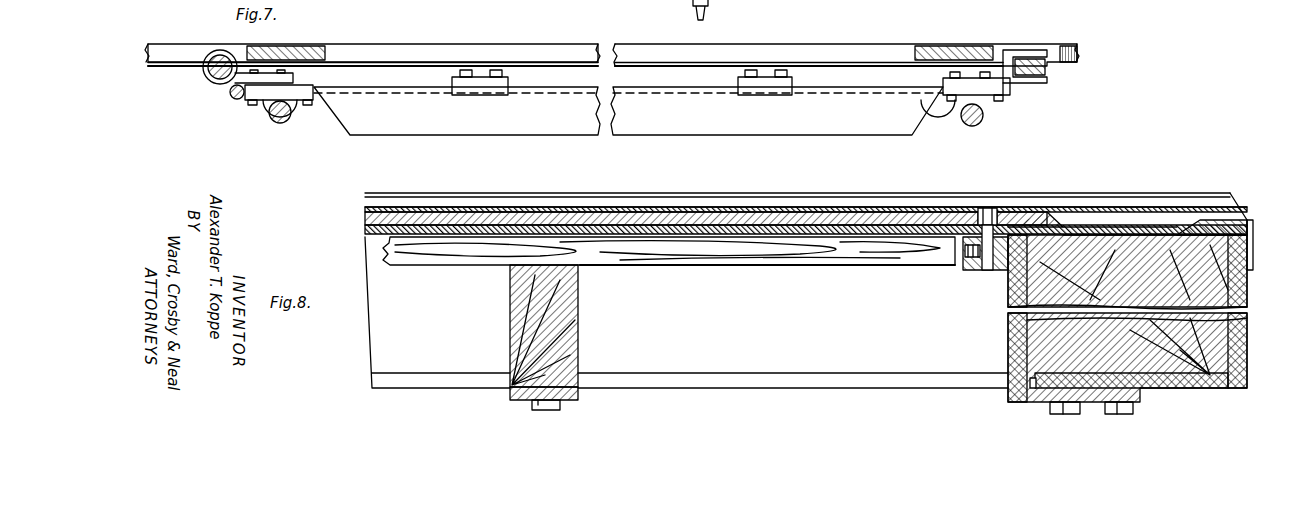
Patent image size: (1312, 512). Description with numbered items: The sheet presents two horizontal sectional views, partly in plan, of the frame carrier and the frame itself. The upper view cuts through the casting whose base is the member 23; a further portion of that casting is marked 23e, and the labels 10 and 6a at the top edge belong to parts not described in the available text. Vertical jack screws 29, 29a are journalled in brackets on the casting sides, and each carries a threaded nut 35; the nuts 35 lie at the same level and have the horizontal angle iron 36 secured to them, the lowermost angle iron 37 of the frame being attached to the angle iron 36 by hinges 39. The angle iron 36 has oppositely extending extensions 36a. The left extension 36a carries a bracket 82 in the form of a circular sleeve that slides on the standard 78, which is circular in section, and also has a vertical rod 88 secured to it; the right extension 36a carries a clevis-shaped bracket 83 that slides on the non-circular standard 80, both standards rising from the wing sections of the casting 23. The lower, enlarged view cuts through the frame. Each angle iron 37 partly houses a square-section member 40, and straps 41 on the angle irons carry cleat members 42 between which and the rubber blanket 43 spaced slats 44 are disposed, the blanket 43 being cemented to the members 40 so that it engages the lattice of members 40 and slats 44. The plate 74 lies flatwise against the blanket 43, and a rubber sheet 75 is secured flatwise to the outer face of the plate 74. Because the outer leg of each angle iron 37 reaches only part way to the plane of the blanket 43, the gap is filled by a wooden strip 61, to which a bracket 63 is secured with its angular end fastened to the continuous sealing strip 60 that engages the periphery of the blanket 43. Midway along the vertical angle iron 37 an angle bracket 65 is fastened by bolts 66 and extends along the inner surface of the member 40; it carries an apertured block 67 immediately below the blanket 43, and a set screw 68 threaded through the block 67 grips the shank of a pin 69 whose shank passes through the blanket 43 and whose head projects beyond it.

In FIG. 7, the top rail section 23e is at (500, 52).
In FIG. 7, the casting base member 23 is at (826, 50).
In FIG. 7, the angle iron 36 is at (603, 132).
In FIG. 7, the standard 78 is at (210, 70).
In FIG. 7, the bracket 82 is at (222, 83).
In FIG. 7, the vertical rod 88 is at (236, 100).
In FIG. 7, the extension 36a is at (268, 100).
In FIG. 7, the nut 35 is at (283, 125).
In FIG. 7, the jack screw 29 is at (297, 118).
In FIG. 7, the jack screw 29a is at (971, 127).
In FIG. 7, the hinge 39 is at (492, 88).
In FIG. 7, the bracket 83 is at (1016, 85).
In FIG. 7, the standard 80 is at (1046, 70).
In FIG. 7, the clip 10 is at (681, 11).
In FIG. 7, the clip part 6a is at (742, 14).
In FIG. 8, the rubber sheet 75 is at (826, 206).
In FIG. 8, the plate 74 is at (762, 220).
In FIG. 8, the slat 44 is at (447, 255).
In FIG. 8, the flexible member 43 is at (683, 237).
In FIG. 8, the cleat member 42 is at (572, 325).
In FIG. 8, the strap 41 is at (573, 396).
In FIG. 8, the set screw 68 is at (962, 262).
In FIG. 8, the apertured block 67 is at (974, 272).
In FIG. 8, the pin 69 is at (987, 207).
In FIG. 8, the member 40 is at (1118, 250).
In FIG. 8, the sealing strip 60 is at (1196, 206).
In FIG. 8, the bracket 63 is at (1237, 222).
In FIG. 8, the strip 61 is at (1253, 251).
In FIG. 8, the angle bracket 65 is at (1013, 354).
In FIG. 8, the angle iron 37 is at (1220, 388).
In FIG. 8, the bolt 66 is at (1133, 410).